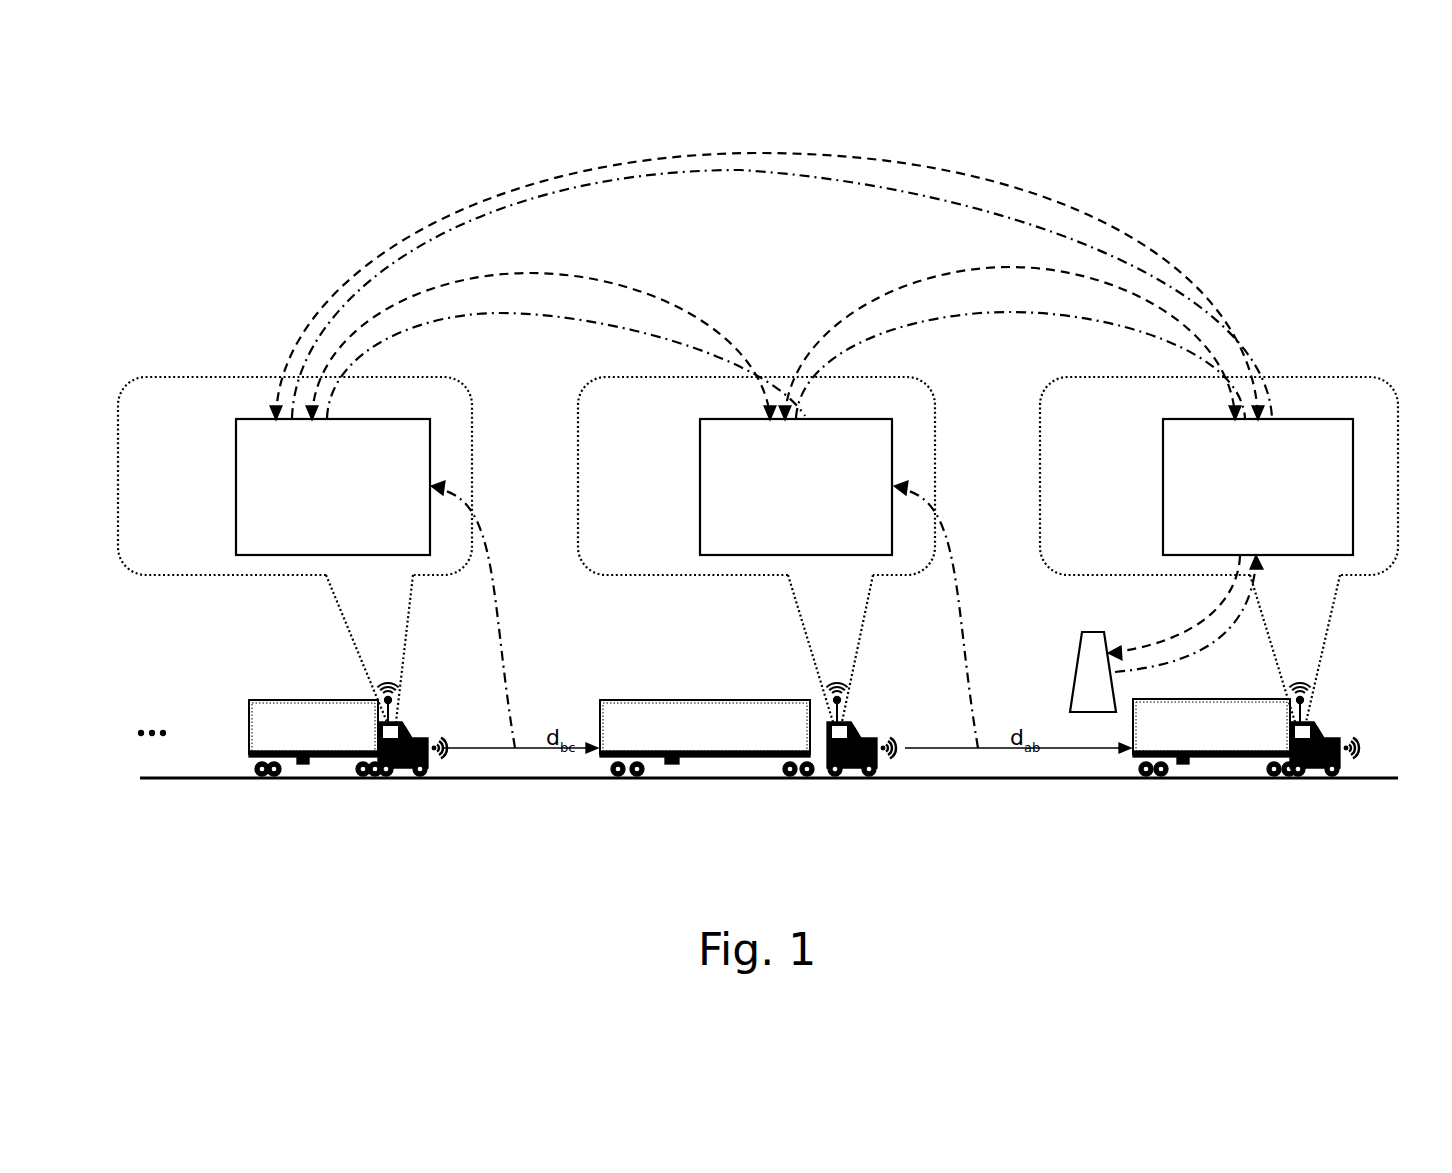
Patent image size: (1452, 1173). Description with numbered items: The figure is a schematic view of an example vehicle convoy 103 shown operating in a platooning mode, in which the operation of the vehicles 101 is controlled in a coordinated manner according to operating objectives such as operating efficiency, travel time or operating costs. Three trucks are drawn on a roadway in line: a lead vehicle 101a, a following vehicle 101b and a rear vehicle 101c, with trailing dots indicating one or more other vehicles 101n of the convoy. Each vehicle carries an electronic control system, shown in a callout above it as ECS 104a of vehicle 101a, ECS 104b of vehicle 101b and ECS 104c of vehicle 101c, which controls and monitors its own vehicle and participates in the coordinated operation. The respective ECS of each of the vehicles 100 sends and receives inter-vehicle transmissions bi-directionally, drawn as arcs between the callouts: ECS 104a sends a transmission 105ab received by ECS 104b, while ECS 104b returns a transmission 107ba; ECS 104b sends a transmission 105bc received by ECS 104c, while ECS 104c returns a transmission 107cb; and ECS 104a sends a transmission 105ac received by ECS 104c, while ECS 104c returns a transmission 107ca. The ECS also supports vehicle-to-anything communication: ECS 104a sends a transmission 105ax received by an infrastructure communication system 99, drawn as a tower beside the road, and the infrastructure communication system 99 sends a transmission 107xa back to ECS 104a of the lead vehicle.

The vehicles 100 is at (1378, 116).
The infrastructure communication system 99 is at (1072, 672).
The vehicles 101 is at (1410, 699).
The vehicle 101a is at (1329, 740).
The vehicle 101b is at (869, 740).
The vehicle 101c is at (407, 740).
The other vehicles 101n is at (152, 728).
The vehicle convoy 103 is at (1265, 850).
The electronic control system 104a is at (1163, 487).
The electronic control system 104b is at (700, 487).
The electronic control system 104c is at (236, 487).
The transmission 105ac is at (556, 190).
The transmission 105bc is at (638, 280).
The transmission 105ab is at (873, 302).
The transmission 105ax is at (1183, 632).
The transmission 107ca is at (892, 183).
The transmission 107cb is at (648, 326).
The transmission 107ba is at (1116, 328).
The transmission 107xa is at (1175, 658).